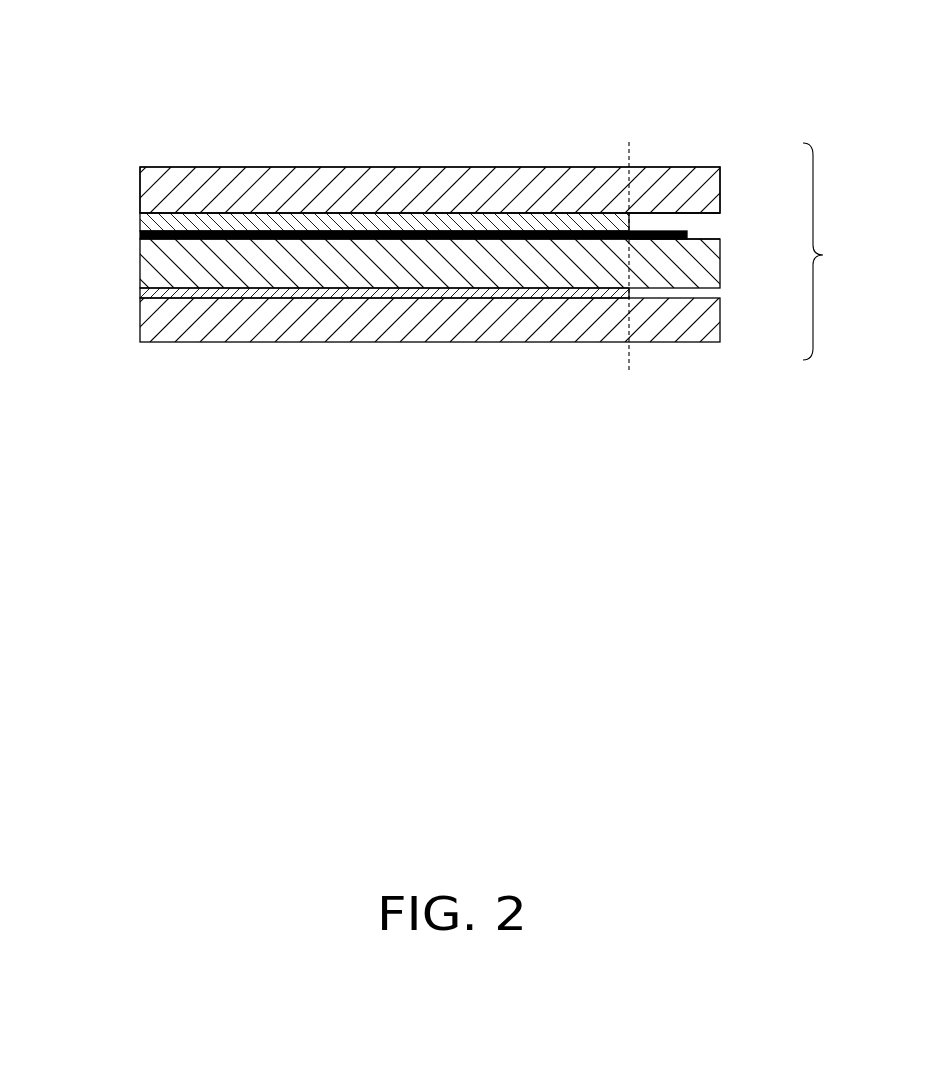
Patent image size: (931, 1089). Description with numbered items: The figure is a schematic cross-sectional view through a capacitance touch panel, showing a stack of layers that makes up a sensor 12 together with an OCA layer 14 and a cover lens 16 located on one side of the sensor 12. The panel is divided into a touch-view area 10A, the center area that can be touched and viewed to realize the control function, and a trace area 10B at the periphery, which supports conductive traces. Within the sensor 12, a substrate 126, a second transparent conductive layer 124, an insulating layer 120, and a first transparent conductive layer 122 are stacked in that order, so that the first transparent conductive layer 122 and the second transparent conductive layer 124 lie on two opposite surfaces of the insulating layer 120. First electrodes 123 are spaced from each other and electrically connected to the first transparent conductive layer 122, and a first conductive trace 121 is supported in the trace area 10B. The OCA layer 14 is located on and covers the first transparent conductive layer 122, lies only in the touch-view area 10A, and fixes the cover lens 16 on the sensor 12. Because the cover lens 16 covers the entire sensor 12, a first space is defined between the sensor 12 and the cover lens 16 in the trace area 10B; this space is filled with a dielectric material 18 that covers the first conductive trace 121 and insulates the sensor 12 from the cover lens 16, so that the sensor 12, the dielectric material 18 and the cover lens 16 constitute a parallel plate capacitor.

The touch-view area 10A is at (319, 145).
The trace area 10B is at (670, 153).
The sensor 12 is at (829, 251).
The OCA layer 14 is at (148, 223).
The cover lens 16 is at (150, 193).
The dielectric material 18 is at (700, 222).
The insulating layer 120 is at (690, 281).
The first conductive trace 121 is at (705, 182).
The first transparent conductive layer 122 is at (615, 248).
The first electrodes 123 is at (637, 206).
The second transparent conductive layer 124 is at (625, 297).
The substrate 126 is at (690, 332).